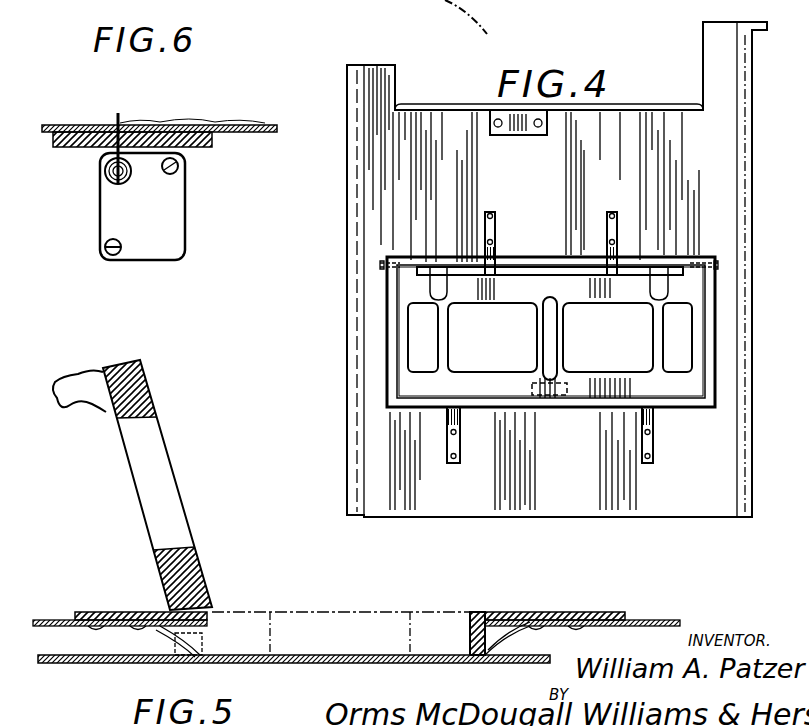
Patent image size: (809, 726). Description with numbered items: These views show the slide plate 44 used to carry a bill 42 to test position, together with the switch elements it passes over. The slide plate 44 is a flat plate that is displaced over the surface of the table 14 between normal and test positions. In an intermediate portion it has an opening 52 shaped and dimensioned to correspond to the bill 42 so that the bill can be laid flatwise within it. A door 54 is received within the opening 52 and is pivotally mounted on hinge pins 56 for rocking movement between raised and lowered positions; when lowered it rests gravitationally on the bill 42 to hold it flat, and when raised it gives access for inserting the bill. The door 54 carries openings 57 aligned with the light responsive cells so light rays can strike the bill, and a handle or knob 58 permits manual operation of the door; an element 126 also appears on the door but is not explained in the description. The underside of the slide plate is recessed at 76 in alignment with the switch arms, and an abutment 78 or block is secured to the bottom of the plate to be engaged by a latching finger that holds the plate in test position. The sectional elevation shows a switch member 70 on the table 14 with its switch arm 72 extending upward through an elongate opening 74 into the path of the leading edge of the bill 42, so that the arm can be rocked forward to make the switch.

In FIG. 5, the table 14 is at (408, 665).
In FIG. 5, the bill 42 is at (292, 655).
In FIG. 6, the bill 42 is at (160, 124).
In FIG. 4, the slide plate 44 is at (695, 500).
In FIG. 5, the slide plate 44 is at (572, 614).
In FIG. 4, the opening 52 is at (578, 400).
In FIG. 5, the opening 52 is at (470, 630).
In FIG. 4, the door 54 is at (682, 384).
In FIG. 5, the door 54 is at (180, 487).
In FIG. 4, the hinge pins 56 is at (420, 260).
In FIG. 5, the hinge pins 56 is at (218, 612).
In FIG. 4, the openings 57 is at (502, 337).
In FIG. 4, the handle or knob 58 is at (508, 412).
In FIG. 5, the handle or knob 58 is at (68, 392).
In FIG. 6, the switch member 70 is at (153, 218).
In FIG. 6, the switch arm 72 is at (115, 118).
In FIG. 6, the openings 74 is at (91, 135).
In FIG. 4, the recess 76 is at (478, 267).
In FIG. 4, the abutment or block 78 is at (530, 137).
In FIG. 4, the slot 126 is at (553, 324).
In FIG. 5, the slot 126 is at (155, 430).